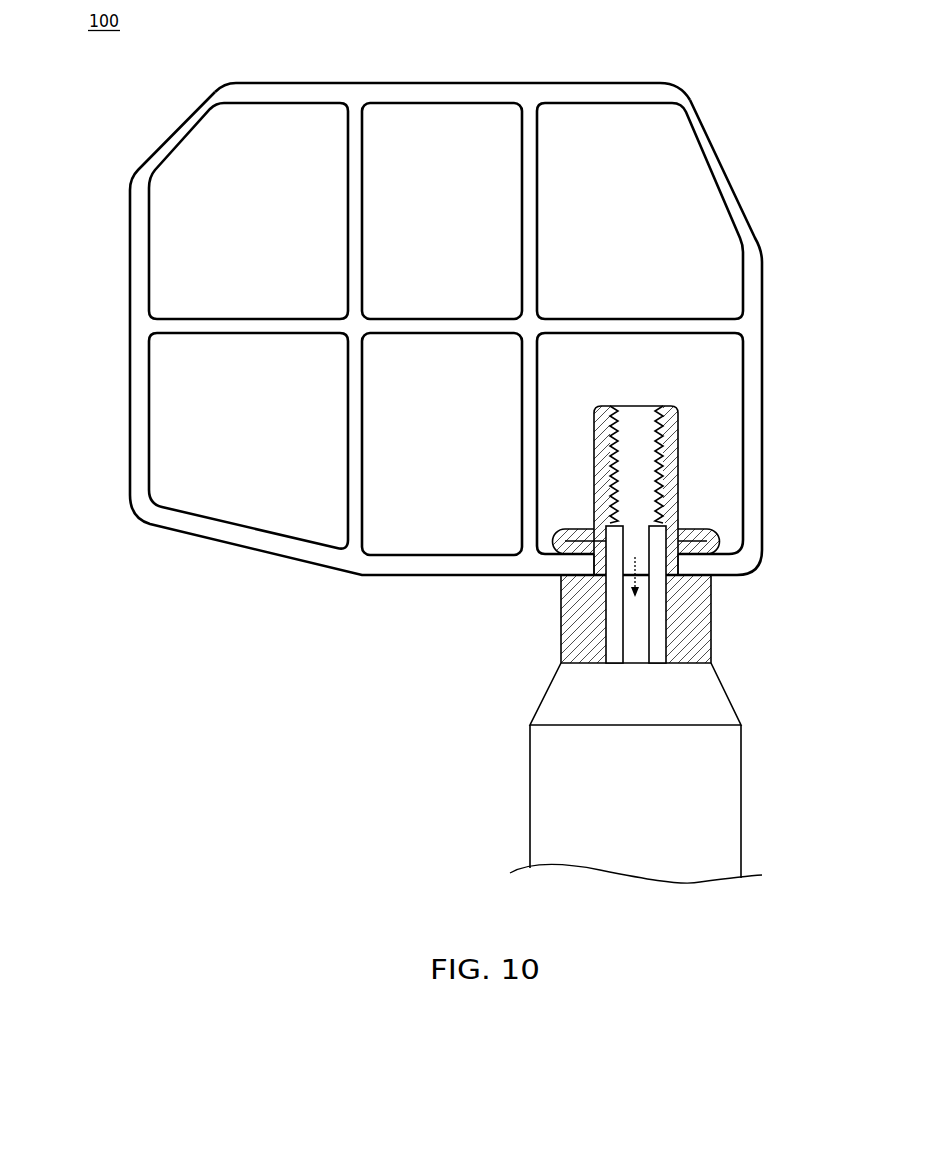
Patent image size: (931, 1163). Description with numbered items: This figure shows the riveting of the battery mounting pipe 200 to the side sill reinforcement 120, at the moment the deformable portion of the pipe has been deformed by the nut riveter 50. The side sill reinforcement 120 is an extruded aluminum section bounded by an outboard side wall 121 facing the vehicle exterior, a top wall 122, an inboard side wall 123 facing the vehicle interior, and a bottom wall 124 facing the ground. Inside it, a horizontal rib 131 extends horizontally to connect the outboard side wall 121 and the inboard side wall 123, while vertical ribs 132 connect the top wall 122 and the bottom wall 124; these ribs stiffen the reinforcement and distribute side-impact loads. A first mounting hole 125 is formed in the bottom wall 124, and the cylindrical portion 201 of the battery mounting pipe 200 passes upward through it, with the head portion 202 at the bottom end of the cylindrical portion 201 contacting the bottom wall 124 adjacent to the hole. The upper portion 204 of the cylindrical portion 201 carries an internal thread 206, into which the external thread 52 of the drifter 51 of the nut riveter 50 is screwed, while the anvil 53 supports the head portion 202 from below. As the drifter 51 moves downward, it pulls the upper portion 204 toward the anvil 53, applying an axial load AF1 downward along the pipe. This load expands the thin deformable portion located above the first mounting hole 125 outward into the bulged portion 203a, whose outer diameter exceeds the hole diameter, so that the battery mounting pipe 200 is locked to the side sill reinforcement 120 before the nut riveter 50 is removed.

The side sill reinforcement 120 is at (430, 329).
The outboard side wall 121 is at (128, 341).
The top wall 122 is at (451, 83).
The inboard side wall 123 is at (767, 288).
The bottom wall 124 is at (440, 576).
The first mounting hole 125 is at (553, 525).
The horizontal rib 131 is at (440, 334).
The vertical rib 132 is at (522, 208).
The battery mounting pipe 200 is at (648, 510).
The cylindrical portion 201 is at (655, 466).
The head portion 202 is at (703, 621).
The bulged portion 203a is at (722, 530).
The upper portion 204 is at (680, 408).
The internal thread 206 is at (655, 405).
The nut riveter 50 is at (658, 644).
The drifter 51 is at (635, 614).
The external thread 52 is at (663, 478).
The anvil 53 is at (558, 695).
The axial load AF1 is at (640, 600).